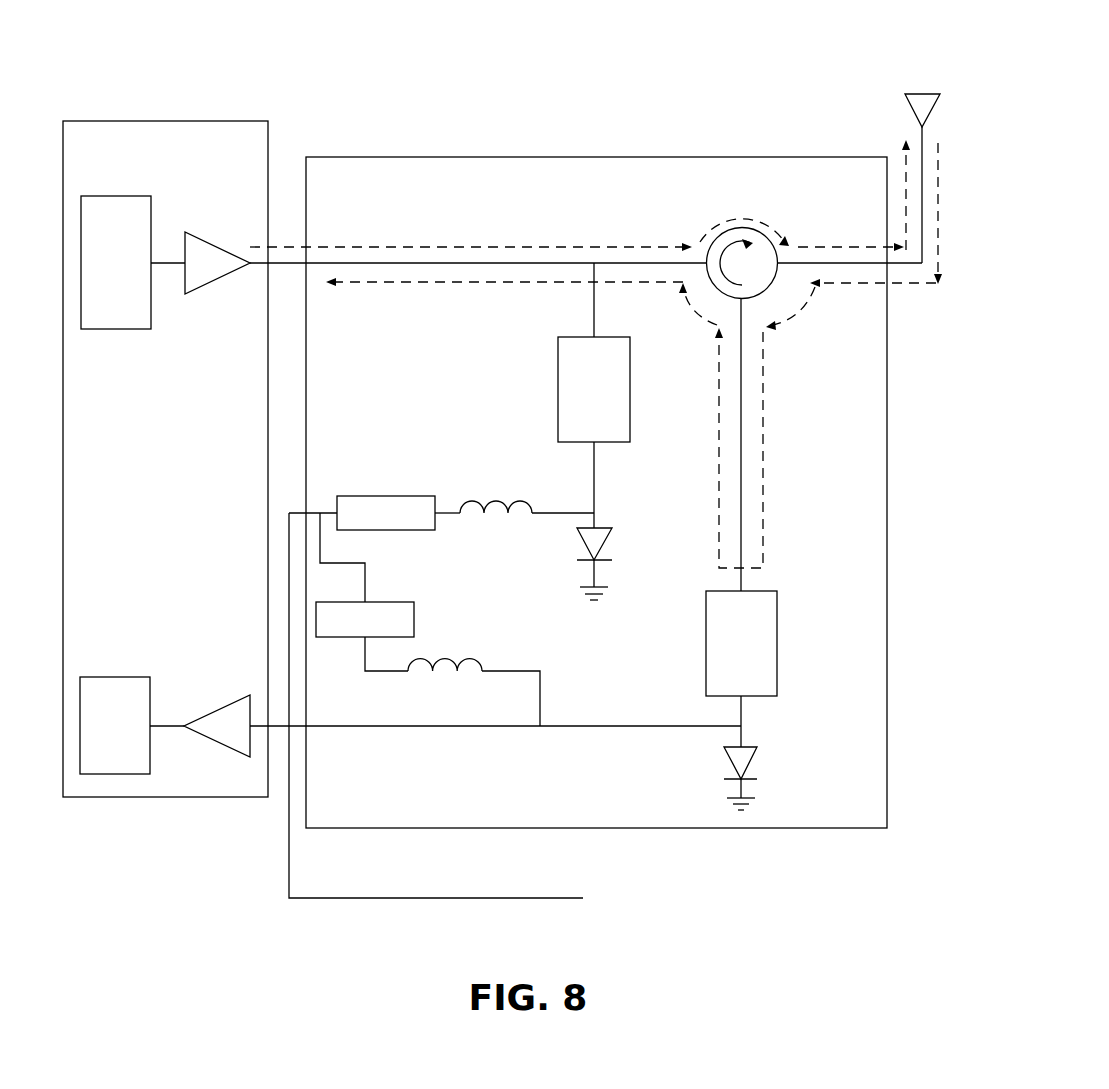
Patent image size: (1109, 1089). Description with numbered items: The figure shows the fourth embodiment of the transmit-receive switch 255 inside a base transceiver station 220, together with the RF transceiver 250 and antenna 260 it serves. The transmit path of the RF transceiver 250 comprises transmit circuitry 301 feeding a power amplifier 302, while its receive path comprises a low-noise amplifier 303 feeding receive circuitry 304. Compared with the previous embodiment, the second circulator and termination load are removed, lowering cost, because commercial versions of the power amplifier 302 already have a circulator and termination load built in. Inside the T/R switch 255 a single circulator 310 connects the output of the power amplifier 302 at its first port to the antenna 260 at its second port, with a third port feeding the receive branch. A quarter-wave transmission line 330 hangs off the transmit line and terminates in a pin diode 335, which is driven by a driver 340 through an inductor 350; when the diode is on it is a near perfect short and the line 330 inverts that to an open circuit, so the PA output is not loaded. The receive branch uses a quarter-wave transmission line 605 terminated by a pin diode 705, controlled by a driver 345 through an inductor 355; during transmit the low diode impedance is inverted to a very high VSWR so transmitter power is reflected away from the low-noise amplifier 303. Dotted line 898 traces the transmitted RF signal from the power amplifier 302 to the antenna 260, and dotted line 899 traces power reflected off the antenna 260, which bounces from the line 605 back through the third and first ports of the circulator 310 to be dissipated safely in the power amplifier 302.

The BTS 220 is at (712, 60).
The RF transceiver 250 is at (168, 121).
The T/R switch 255 is at (596, 157).
The antenna 260 is at (918, 94).
The transmit circuitry 301 is at (118, 330).
The power amplifier 302 is at (218, 246).
The low-noise amplifier 303 is at (214, 705).
The receive circuitry 304 is at (113, 677).
The circulator 310 is at (743, 228).
The quarter-wave transmission line 330 is at (558, 385).
The pin diode 335 is at (612, 540).
The driver 340 is at (386, 496).
The driver 345 is at (396, 602).
The inductor 350 is at (496, 494).
The inductor 355 is at (467, 652).
The quarter-wave transmission line 605 is at (706, 643).
The pin diode 705 is at (757, 757).
The dotted line 898 is at (537, 247).
The dotted line 899 is at (910, 285).